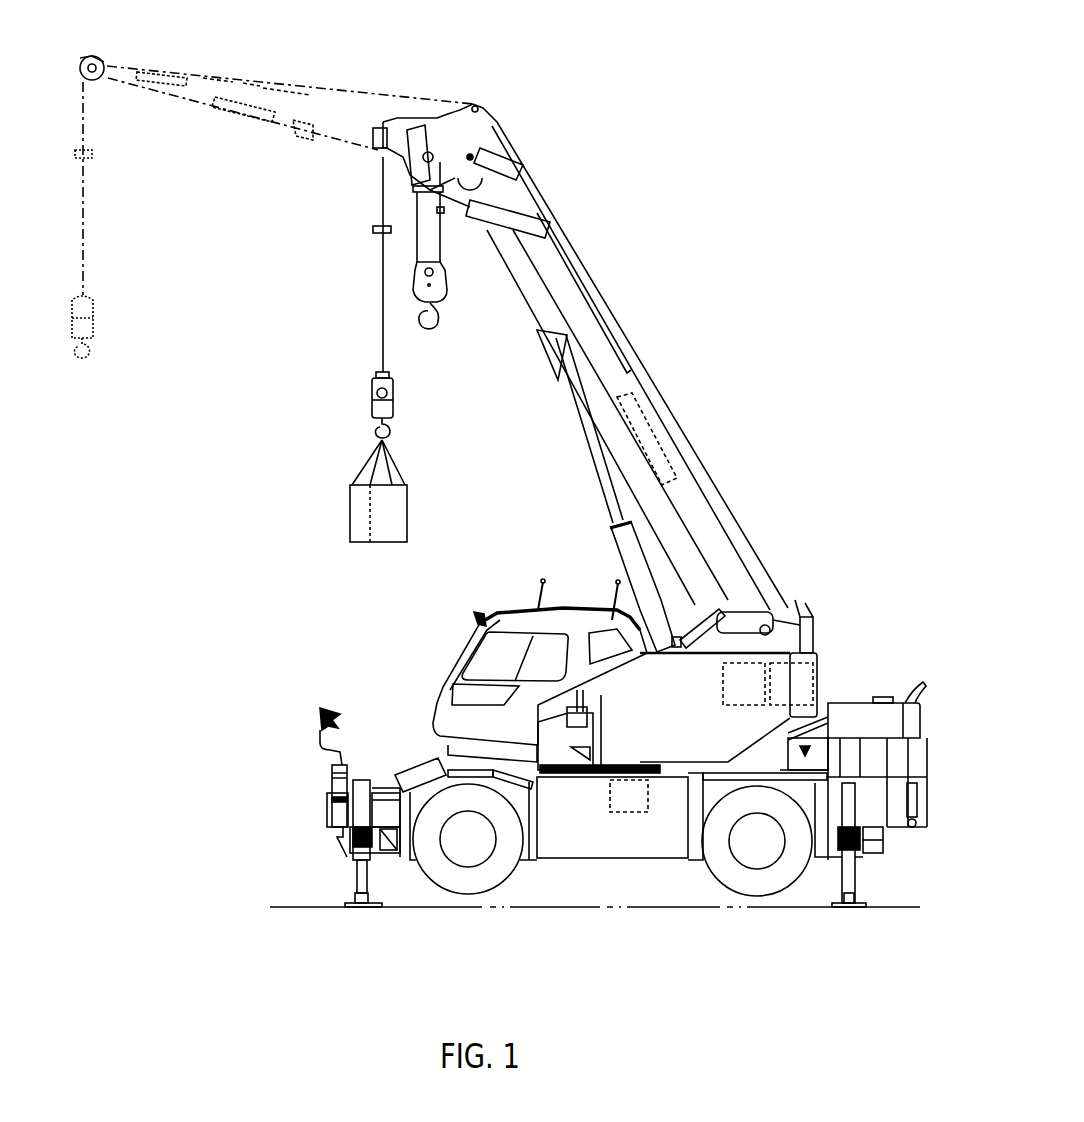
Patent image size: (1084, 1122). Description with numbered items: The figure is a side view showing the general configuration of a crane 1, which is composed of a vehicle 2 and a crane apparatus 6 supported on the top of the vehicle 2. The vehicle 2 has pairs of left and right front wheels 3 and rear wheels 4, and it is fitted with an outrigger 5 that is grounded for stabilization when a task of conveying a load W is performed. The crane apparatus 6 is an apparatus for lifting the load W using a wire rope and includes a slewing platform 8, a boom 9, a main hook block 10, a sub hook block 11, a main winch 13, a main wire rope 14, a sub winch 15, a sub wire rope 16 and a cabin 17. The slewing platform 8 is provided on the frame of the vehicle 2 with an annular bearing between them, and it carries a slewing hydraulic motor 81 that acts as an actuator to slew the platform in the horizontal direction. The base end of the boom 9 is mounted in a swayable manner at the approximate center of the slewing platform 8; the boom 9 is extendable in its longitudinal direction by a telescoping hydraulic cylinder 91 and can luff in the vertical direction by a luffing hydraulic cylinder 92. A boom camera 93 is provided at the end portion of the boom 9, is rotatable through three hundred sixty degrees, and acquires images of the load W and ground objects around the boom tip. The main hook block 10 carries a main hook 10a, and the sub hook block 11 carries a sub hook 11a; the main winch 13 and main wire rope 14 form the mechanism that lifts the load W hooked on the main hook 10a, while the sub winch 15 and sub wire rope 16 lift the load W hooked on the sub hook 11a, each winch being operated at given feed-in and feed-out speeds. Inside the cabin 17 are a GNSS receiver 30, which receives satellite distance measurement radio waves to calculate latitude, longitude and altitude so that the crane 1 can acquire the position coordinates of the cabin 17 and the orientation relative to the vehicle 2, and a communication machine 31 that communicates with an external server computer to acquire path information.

The crane 1 is at (802, 50).
The vehicle 2 is at (283, 790).
The front wheels 3 is at (468, 895).
The rear wheels 4 is at (760, 897).
The outrigger 5 is at (358, 868).
The crane apparatus 6 is at (795, 273).
The slewing platform 8 is at (565, 778).
The slewing hydraulic motor 81 is at (628, 814).
The boom 9 is at (636, 316).
The telescoping hydraulic cylinder 91 is at (692, 432).
The luffing hydraulic cylinder 92 is at (597, 494).
The boom camera 93 is at (380, 140).
The main hook block 10 is at (446, 285).
The main hook 10a is at (442, 322).
The sub hook block 11 is at (395, 388).
The sub hook 11a is at (392, 432).
The main winch 13 is at (820, 660).
The main wire rope 14 is at (441, 252).
The sub winch 15 is at (790, 600).
The sub wire rope 16 is at (385, 352).
The cabin 17 is at (455, 660).
The GNSS receiver 30 is at (538, 584).
The communication machine 31 is at (616, 584).
The load W is at (409, 512).